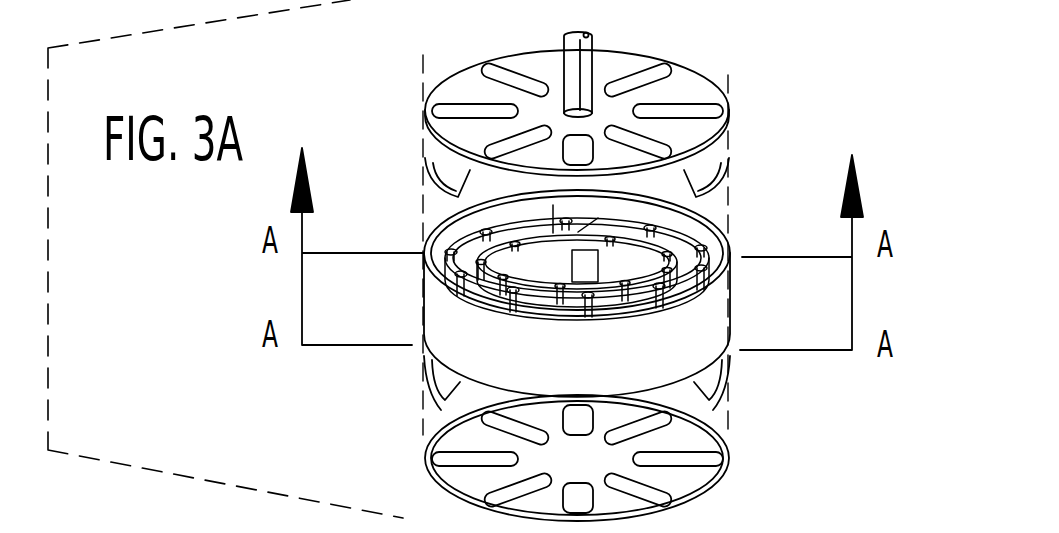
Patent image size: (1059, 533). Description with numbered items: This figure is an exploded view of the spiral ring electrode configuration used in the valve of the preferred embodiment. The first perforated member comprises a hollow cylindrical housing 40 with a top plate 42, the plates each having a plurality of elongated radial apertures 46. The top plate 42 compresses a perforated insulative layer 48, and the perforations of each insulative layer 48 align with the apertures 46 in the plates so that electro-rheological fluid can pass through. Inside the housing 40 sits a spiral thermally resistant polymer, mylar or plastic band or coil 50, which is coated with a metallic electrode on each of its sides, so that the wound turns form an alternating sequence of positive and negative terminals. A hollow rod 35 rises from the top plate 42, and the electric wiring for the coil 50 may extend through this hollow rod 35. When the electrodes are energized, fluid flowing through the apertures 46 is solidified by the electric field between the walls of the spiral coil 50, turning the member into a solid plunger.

The hollow rod 35 is at (577, 60).
The hollow cylindrical housing 40 is at (733, 322).
The top plate 42 is at (705, 80).
The elongated radial apertures 46 is at (645, 65).
The perforated insulative layer 48 is at (727, 158).
The spiral band or coil 50 is at (683, 233).